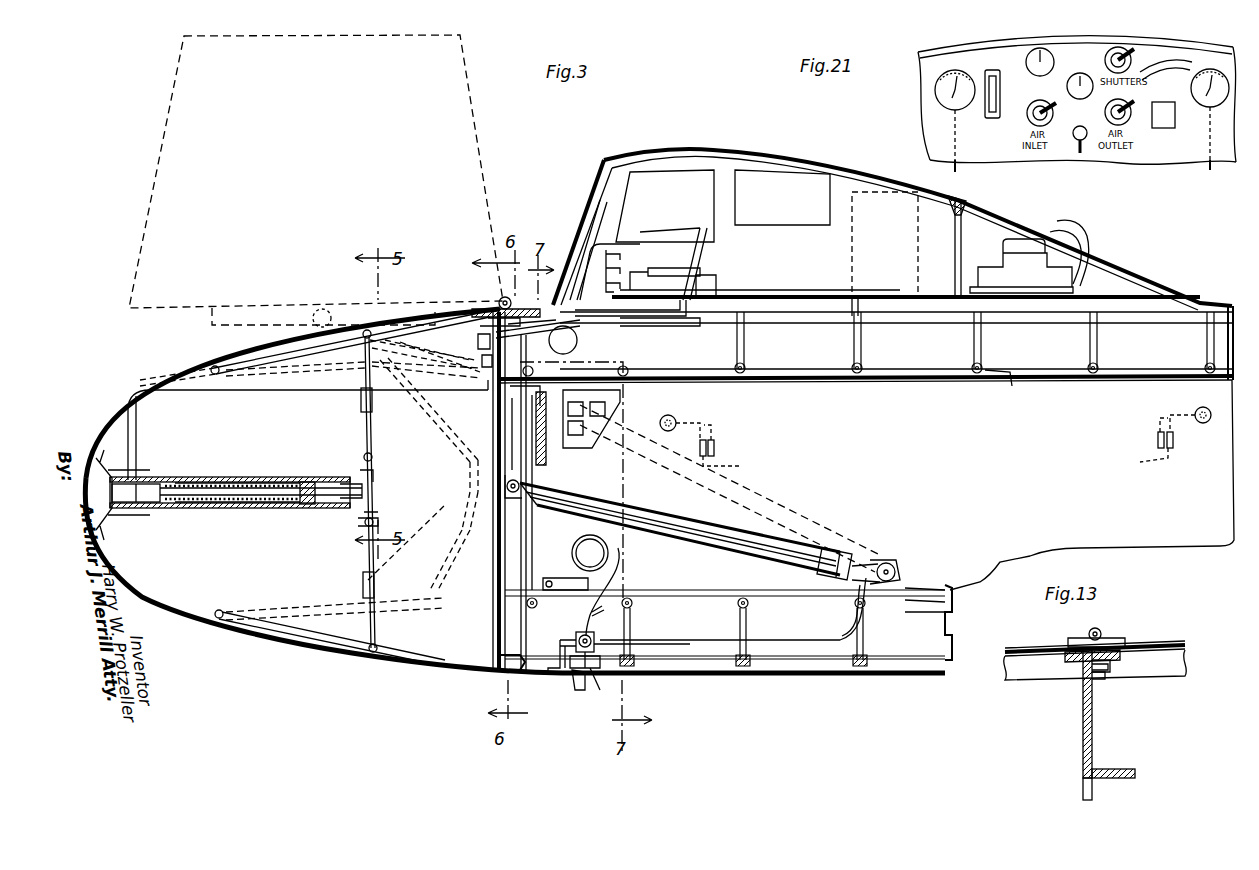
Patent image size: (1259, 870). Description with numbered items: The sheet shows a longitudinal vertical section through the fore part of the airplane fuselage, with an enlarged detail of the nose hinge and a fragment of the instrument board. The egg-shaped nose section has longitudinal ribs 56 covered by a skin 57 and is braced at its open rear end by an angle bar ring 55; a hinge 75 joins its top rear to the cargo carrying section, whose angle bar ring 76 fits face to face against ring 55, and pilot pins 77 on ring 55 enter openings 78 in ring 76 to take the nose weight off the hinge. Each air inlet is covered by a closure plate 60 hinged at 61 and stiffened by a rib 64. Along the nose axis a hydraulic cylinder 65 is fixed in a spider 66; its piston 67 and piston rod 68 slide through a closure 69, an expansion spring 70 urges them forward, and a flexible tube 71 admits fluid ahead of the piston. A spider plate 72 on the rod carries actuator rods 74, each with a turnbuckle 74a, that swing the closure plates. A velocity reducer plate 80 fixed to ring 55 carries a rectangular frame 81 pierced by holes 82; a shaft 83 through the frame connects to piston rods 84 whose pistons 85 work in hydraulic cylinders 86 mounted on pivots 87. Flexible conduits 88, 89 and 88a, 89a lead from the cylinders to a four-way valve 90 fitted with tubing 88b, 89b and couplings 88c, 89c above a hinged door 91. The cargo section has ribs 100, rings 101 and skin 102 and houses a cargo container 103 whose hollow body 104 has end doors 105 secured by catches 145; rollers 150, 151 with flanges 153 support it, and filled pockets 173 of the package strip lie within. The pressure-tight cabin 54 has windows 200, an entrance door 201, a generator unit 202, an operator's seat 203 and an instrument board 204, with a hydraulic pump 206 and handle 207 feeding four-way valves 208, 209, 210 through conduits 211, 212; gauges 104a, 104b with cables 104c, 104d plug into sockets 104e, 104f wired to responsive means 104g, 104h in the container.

In FIG. 3, the cabin 54 is at (742, 147).
In FIG. 3, the angle bar ring 55 is at (486, 328).
In FIG. 13, the angle bar ring 55 is at (1078, 660).
In FIG. 13, the ribs 56 is at (1018, 678).
In FIG. 3, the skin 57 is at (190, 372).
In FIG. 13, the skin 57 is at (1040, 648).
In FIG. 3, the closure plate 60 is at (266, 352).
In FIG. 3, the hinge connection 61 is at (216, 374).
In FIG. 3, the longitudinal rib 64 is at (272, 350).
In FIG. 3, the hydraulic cylinder 65 is at (245, 478).
In FIG. 3, the spider 66 is at (140, 515).
In FIG. 3, the piston 67 is at (158, 502).
In FIG. 3, the piston rod 68 is at (220, 504).
In FIG. 3, the closure 69 is at (310, 480).
In FIG. 3, the expansion spring 70 is at (262, 504).
In FIG. 3, the flexible tube 71 is at (134, 455).
In FIG. 3, the spider plate 72 is at (358, 522).
In FIG. 3, the actuator rod 74 is at (372, 436).
In FIG. 3, the turnbuckle 74a is at (360, 400).
In FIG. 3, the hinge 75 is at (500, 300).
In FIG. 13, the hinge 75 is at (1100, 628).
In FIG. 3, the angle bar ring 76 is at (508, 655).
In FIG. 13, the angle bar ring 76 is at (1118, 663).
In FIG. 13, the pilot pins 77 is at (1108, 676).
In FIG. 13, the openings 78 is at (1108, 682).
In FIG. 3, the velocity reducer plate 80 is at (485, 577).
In FIG. 13, the velocity reducer plate 80 is at (1082, 737).
In FIG. 3, the rectangular frame 81 is at (520, 374).
In FIG. 3, the holes 82 is at (500, 415).
In FIG. 3, the shaft 83 is at (508, 496).
In FIG. 3, the piston rod 84 is at (696, 536).
In FIG. 3, the piston 85 is at (845, 550).
In FIG. 3, the hydraulic cylinder 86 is at (795, 530).
In FIG. 3, the pivot 87 is at (892, 564).
In FIG. 3, the flexible conduit 88 is at (612, 556).
In FIG. 3, the flexible conduit 88a is at (612, 636).
In FIG. 3, the tubing 88b is at (572, 636).
In FIG. 3, the coupling part 88c is at (558, 664).
In FIG. 3, the flexible conduit 89 is at (830, 577).
In FIG. 3, the flexible conduit 89a is at (836, 612).
In FIG. 3, the tubing 89b is at (618, 644).
In FIG. 3, the coupling part 89c is at (596, 680).
In FIG. 3, the four-way valve 90 is at (585, 634).
In FIG. 3, the hinged door 91 is at (580, 694).
In FIG. 3, the longitudinal ribs 100 is at (790, 316).
In FIG. 3, the rings 101 is at (850, 294).
In FIG. 3, the sheet metal skin 102 is at (878, 296).
In FIG. 3, the cargo container 103 is at (1068, 360).
In FIG. 3, the hollow body 104 is at (925, 368).
In FIG. 21, the gauge 104a is at (952, 70).
In FIG. 21, the gauge 104b is at (1208, 70).
In FIG. 21, the cable 104c is at (960, 170).
In FIG. 21, the cable 104d is at (1210, 172).
In FIG. 3, the socket 104e is at (676, 418).
In FIG. 3, the socket 104f is at (1203, 407).
In FIG. 3, the pressure and temperature responsive means 104g is at (714, 448).
In FIG. 3, the pressure and temperature responsive means 104h is at (743, 464).
In FIG. 3, the door 105 is at (530, 546).
In FIG. 3, the catches 145 is at (556, 576).
In FIG. 3, the supporting rollers 150 is at (1006, 383).
In FIG. 3, the supporting rollers 151 is at (736, 606).
In FIG. 3, the radial flanges 153 is at (752, 370).
In FIG. 3, the filled pockets 173 is at (592, 436).
In FIG. 3, the windows 200 is at (598, 206).
In FIG. 3, the entrance door 201 is at (822, 268).
In FIG. 3, the electric generator unit 202 is at (994, 256).
In FIG. 3, the operator's seat 203 is at (690, 235).
In FIG. 3, the instrument board 204 is at (618, 240).
In FIG. 21, the instrument board 204 is at (918, 96).
In FIG. 3, the hydraulic pump 206 is at (716, 288).
In FIG. 3, the operating handle 207 is at (700, 270).
In FIG. 21, the four-way valve 208 is at (1108, 50).
In FIG. 21, the four-way valve 209 is at (1025, 118).
In FIG. 21, the four-way valve 210 is at (1135, 120).
In FIG. 3, the conduit 211 is at (668, 318).
In FIG. 3, the conduit 212 is at (700, 326).